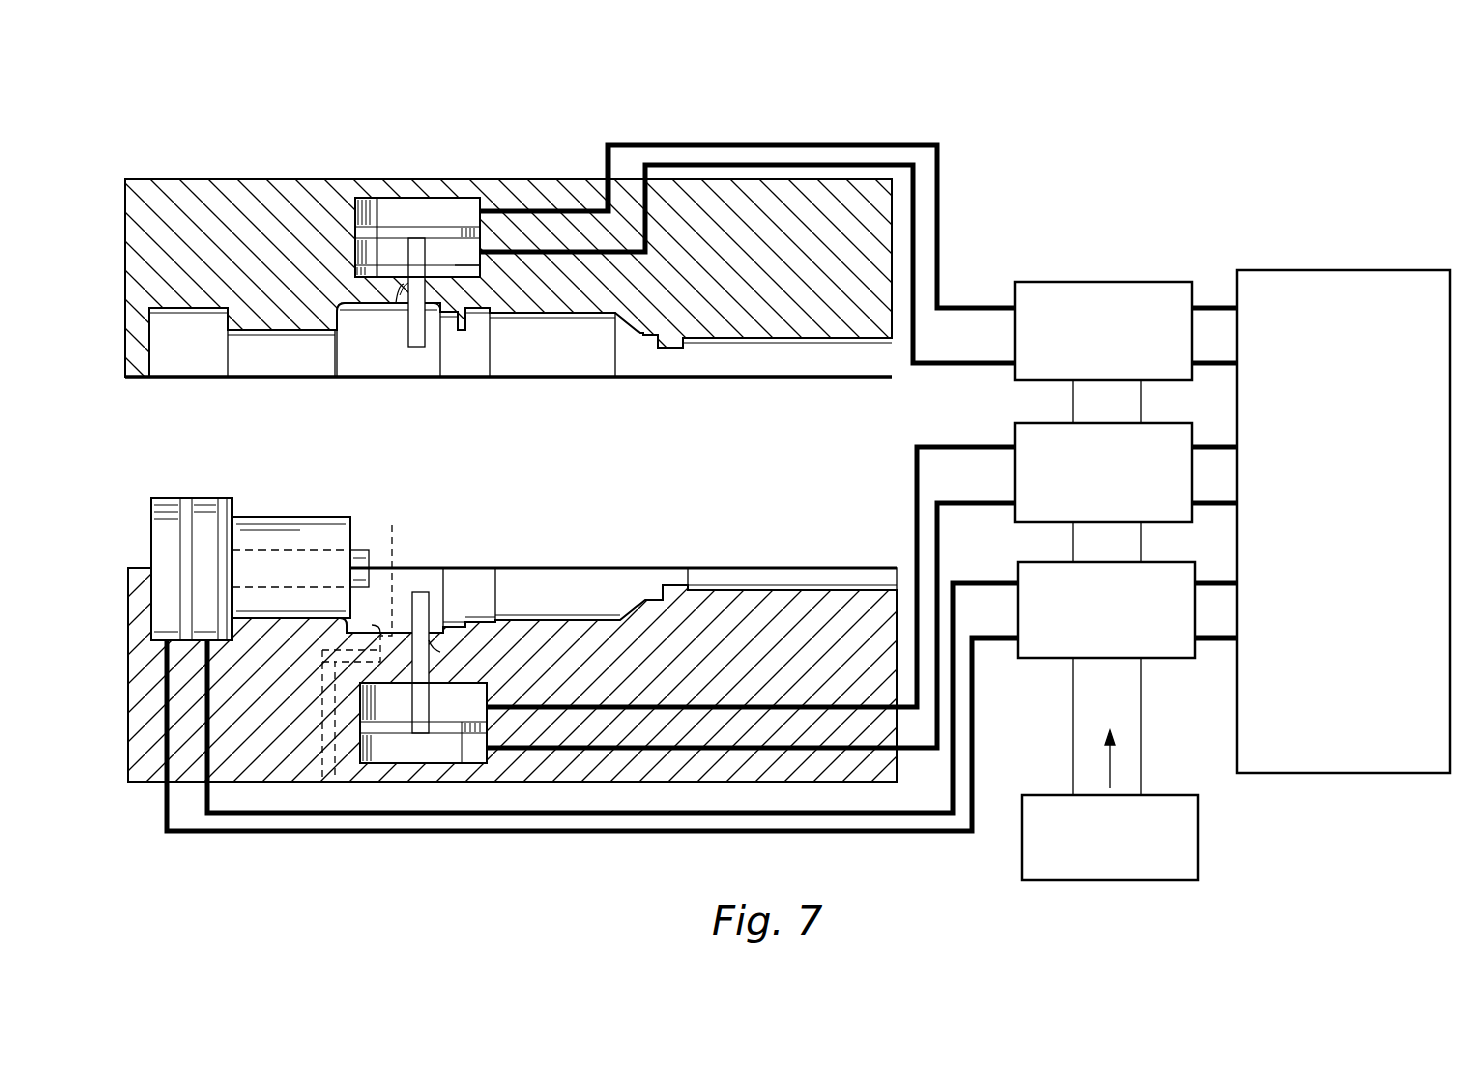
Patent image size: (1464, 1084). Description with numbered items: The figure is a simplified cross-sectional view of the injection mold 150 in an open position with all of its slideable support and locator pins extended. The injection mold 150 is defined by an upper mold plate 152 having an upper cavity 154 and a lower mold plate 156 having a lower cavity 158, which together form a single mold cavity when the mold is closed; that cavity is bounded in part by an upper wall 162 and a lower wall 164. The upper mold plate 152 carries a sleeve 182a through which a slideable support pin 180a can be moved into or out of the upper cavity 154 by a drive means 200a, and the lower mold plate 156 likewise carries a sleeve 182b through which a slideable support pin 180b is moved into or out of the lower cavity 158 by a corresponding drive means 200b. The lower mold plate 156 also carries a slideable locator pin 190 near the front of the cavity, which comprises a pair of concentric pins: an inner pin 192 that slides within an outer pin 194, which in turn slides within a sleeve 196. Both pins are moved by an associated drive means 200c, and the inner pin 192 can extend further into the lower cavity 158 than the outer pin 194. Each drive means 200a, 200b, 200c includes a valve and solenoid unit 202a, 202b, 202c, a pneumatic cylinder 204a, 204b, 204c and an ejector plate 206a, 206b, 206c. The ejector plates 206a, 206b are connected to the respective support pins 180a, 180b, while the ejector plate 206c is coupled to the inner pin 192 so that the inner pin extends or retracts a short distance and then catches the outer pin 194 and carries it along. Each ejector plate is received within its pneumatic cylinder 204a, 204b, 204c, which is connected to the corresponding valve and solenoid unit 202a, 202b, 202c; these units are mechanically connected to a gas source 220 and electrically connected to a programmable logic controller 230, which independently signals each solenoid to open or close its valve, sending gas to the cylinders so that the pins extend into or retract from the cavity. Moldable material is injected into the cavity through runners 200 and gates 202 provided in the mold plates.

The injection mold 150 is at (272, 162).
The upper mold plate 152 is at (262, 254).
The upper cavity 154 is at (595, 372).
The lower mold plate 156 is at (293, 732).
The lower cavity 158 is at (607, 558).
The upper wall 162 is at (368, 314).
The lower wall 164 is at (400, 632).
The slideable support pin 180a is at (413, 349).
The slideable support pin 180b is at (427, 593).
The sleeve 182a is at (400, 288).
The sleeve 182b is at (435, 650).
The slideable locator pin 190 is at (278, 487).
The inner pin 192 is at (363, 562).
The outer pin 194 is at (352, 520).
The sleeve 196 is at (265, 340).
The runners 200 is at (308, 783).
The drive means 200a is at (377, 190).
The drive means 200b is at (366, 778).
The drive means 200c is at (128, 502).
The gates 202 is at (400, 526).
The valve and solenoid unit 202a is at (1024, 282).
The valve and solenoid unit 202b is at (1020, 423).
The valve and solenoid unit 202c is at (1033, 562).
The pneumatic cylinder 204a is at (402, 212).
The pneumatic cylinder 204b is at (418, 760).
The pneumatic cylinder 204c is at (162, 497).
The ejector plate 206a is at (457, 267).
The ejector plate 206b is at (462, 692).
The ejector plate 206c is at (225, 497).
The gas source 220 is at (1047, 795).
The programmable logic controller 230 is at (1288, 270).